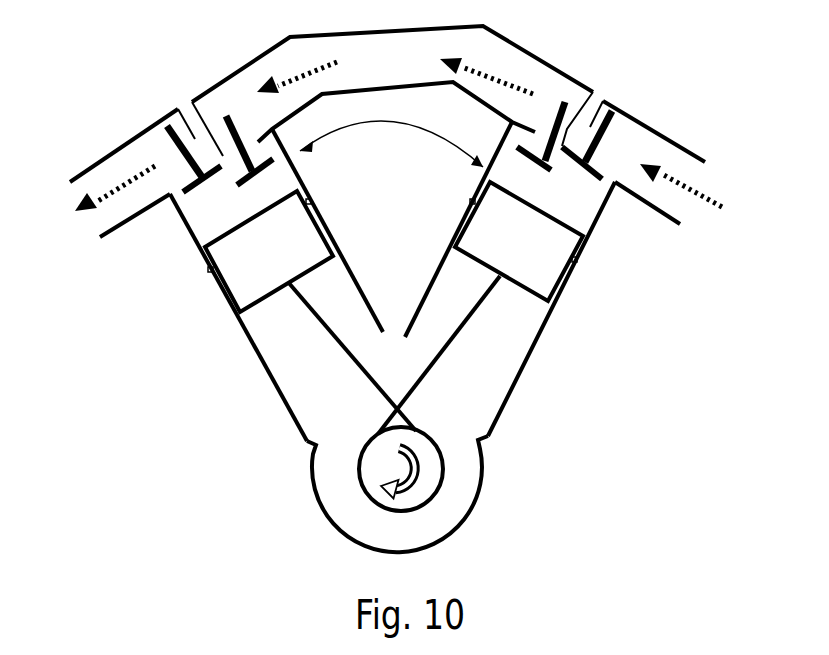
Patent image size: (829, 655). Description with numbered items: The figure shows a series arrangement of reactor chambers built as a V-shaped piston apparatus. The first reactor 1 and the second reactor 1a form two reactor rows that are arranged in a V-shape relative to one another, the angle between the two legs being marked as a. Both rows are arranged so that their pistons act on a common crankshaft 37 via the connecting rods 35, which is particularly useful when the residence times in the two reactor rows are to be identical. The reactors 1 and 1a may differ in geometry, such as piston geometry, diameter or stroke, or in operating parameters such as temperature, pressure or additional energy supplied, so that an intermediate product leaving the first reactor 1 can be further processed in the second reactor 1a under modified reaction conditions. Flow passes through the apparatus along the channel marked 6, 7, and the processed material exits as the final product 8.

The reactor 1 is at (510, 269).
The reactor 1a is at (276, 278).
The intake duct 6 is at (696, 178).
The intake duct 7 is at (696, 178).
The final product 8 is at (107, 191).
The connecting rods 35 is at (350, 342).
The crankshaft 37 is at (440, 483).
The angle a is at (391, 138).